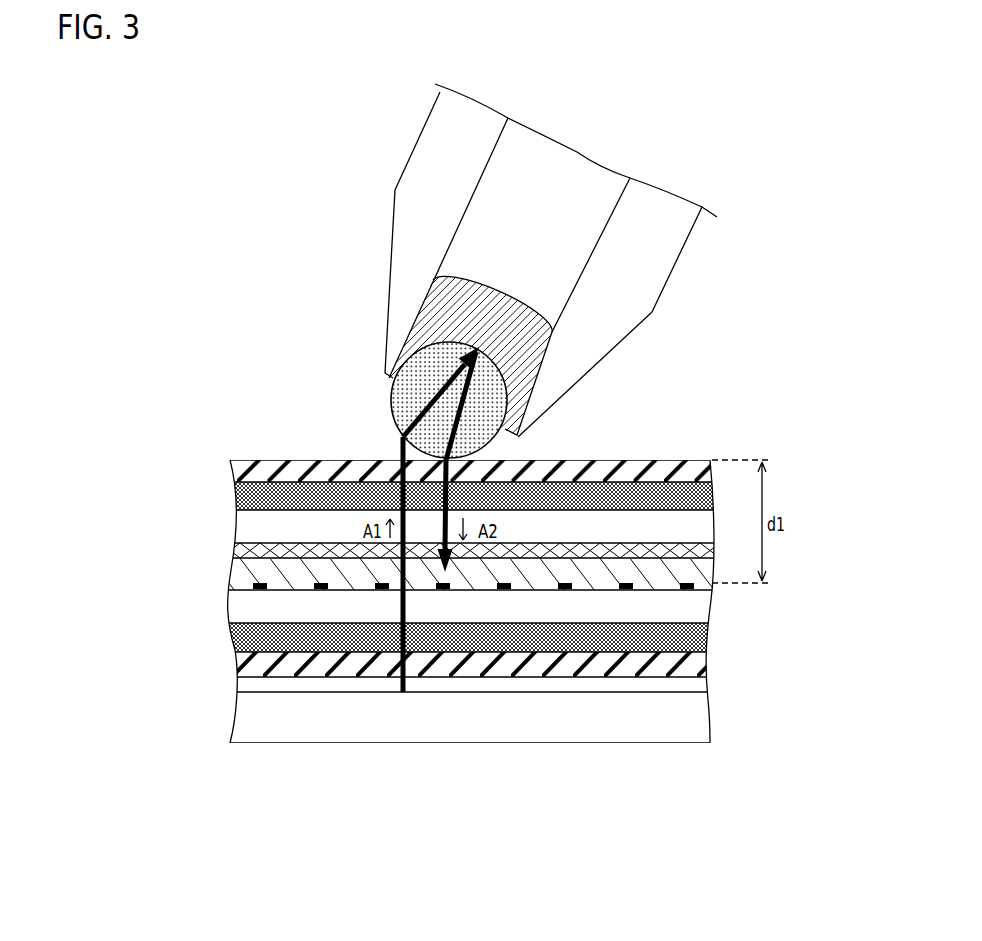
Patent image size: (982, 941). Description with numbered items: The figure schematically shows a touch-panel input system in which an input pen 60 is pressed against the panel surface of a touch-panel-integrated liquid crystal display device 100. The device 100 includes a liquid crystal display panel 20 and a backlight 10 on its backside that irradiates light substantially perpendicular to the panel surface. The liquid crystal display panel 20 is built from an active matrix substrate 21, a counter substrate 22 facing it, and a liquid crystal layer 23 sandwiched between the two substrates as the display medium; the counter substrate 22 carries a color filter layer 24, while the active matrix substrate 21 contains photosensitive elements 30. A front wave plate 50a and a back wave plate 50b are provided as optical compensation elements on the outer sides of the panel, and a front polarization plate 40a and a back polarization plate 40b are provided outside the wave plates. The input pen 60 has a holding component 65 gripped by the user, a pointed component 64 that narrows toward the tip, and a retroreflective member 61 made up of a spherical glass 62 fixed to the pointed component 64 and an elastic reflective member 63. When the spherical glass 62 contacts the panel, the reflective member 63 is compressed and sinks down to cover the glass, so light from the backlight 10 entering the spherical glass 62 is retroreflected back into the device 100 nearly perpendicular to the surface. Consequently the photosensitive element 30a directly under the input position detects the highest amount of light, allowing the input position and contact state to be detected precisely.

The backlight 10 is at (722, 692).
The liquid crystal display panel 20 is at (182, 513).
The active matrix substrate 21 is at (240, 606).
The counter substrate 22 is at (240, 524).
The liquid crystal layer 23 is at (240, 579).
The color filter layer 24 is at (240, 551).
The photosensitive elements 30 is at (692, 587).
The photosensitive element 30a is at (446, 592).
The front polarization plate 40a is at (238, 468).
The back polarization plate 40b is at (697, 666).
The front wave plate 50a is at (238, 497).
The back wave plate 50b is at (707, 636).
The input pen 60 is at (704, 278).
The retroreflective member 61 is at (612, 407).
The spherical glass 62 is at (480, 444).
The reflective member 63 is at (534, 366).
The pointed component 64 is at (620, 335).
The holding component 65 is at (592, 163).
The touch-panel-integrated liquid crystal display device 100 is at (191, 424).